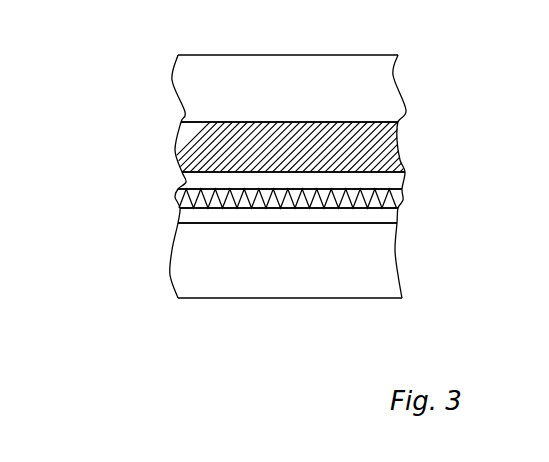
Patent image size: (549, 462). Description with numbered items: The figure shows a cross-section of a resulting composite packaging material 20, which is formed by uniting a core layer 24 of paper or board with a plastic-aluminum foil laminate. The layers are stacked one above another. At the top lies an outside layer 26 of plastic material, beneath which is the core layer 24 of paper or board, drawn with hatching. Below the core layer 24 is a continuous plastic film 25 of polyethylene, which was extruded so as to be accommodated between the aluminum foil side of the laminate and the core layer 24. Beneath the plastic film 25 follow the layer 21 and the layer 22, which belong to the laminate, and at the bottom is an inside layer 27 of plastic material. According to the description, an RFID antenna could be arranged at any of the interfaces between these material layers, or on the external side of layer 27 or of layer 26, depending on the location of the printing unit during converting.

The packaging material 20 is at (247, 159).
The outside layer 26 is at (386, 86).
The core layer 24 is at (399, 140).
The plastic film 25 is at (395, 182).
The layer 21 is at (394, 198).
The layer 22 is at (396, 214).
The inside layer 27 is at (385, 265).